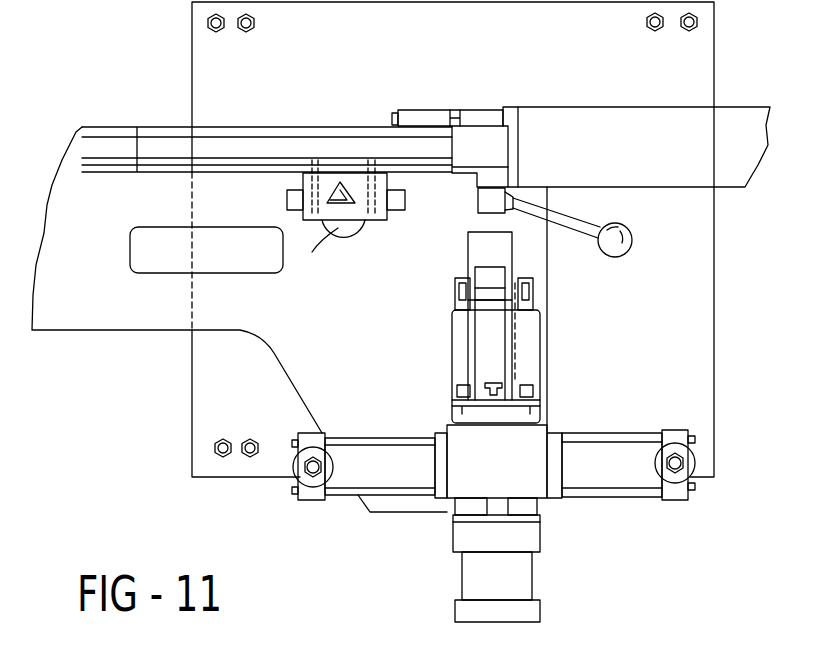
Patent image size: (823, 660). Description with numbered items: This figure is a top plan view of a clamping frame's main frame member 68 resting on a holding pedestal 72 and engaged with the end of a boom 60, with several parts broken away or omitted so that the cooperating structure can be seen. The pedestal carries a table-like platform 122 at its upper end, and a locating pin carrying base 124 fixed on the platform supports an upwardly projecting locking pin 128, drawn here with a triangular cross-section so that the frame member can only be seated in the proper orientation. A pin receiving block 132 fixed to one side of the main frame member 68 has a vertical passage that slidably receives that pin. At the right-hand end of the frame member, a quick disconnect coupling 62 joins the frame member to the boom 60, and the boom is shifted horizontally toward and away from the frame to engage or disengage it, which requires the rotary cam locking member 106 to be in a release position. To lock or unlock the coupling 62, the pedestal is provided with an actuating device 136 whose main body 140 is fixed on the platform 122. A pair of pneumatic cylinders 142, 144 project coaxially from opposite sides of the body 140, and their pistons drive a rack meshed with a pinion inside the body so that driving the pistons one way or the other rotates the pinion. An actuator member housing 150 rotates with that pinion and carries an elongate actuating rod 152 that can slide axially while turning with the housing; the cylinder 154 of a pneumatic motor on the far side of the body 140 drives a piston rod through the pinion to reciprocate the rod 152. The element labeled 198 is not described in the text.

The boom 60 is at (607, 88).
The quick disconnect coupling 62 is at (461, 148).
The main frame member 68 is at (237, 148).
The holding pedestal 72 is at (186, 392).
The rotary cam locking member 106 is at (478, 200).
The table-like platform 122 is at (103, 320).
The locating pin carrying base 124 is at (312, 252).
The locking pin 128 is at (343, 232).
The pin receiving block 132 is at (292, 195).
The actuating device 136 is at (424, 529).
The main body 140 is at (527, 447).
The pneumatic cylinder 142 is at (370, 447).
The pneumatic cylinder 144 is at (623, 453).
The actuator member housing 150 is at (533, 352).
The actuating rod 152 is at (497, 313).
The cylinder 154 is at (520, 575).
The fittings 198 is at (450, 413).